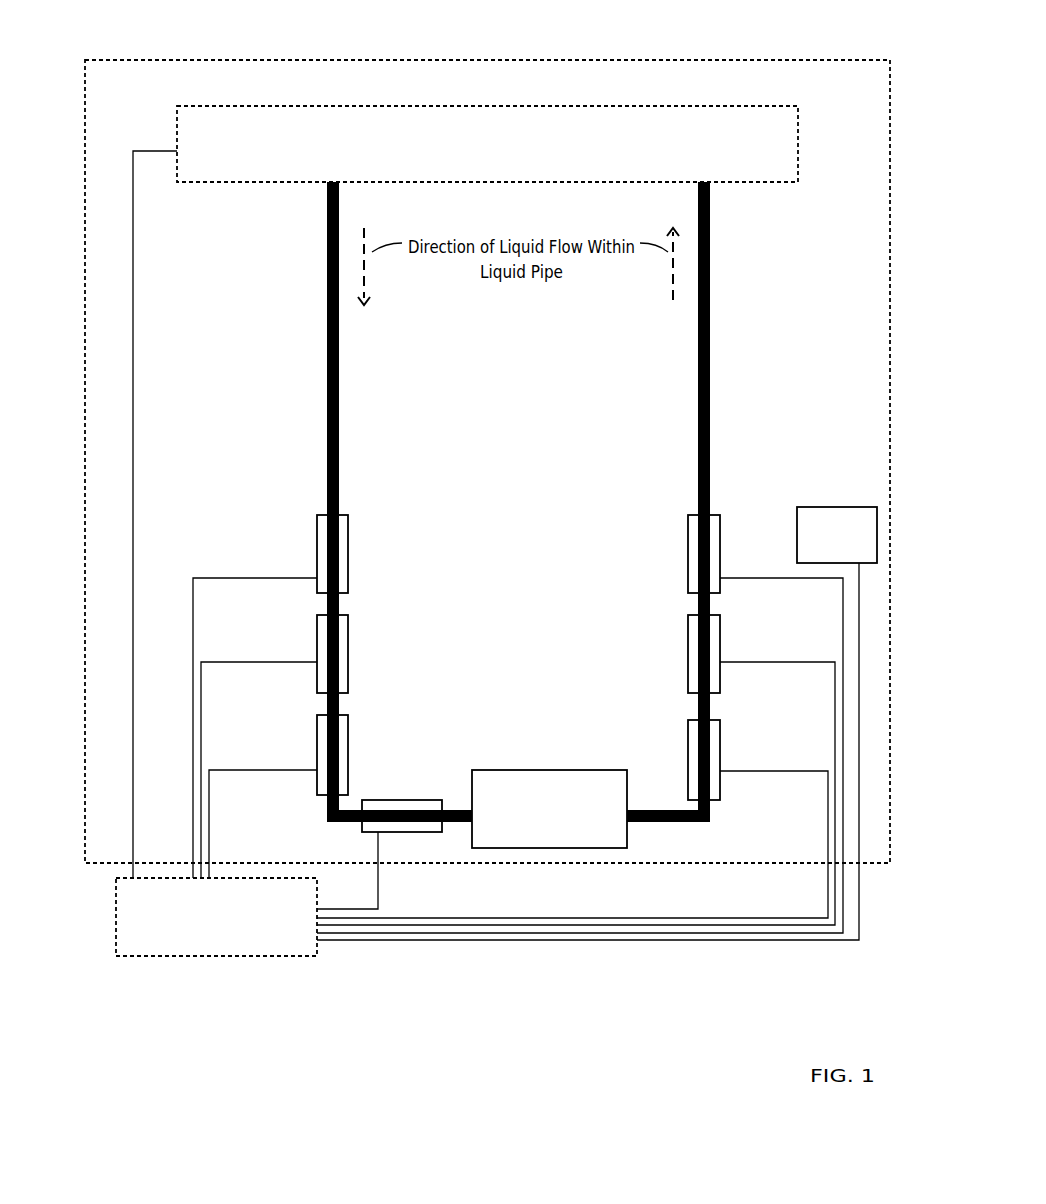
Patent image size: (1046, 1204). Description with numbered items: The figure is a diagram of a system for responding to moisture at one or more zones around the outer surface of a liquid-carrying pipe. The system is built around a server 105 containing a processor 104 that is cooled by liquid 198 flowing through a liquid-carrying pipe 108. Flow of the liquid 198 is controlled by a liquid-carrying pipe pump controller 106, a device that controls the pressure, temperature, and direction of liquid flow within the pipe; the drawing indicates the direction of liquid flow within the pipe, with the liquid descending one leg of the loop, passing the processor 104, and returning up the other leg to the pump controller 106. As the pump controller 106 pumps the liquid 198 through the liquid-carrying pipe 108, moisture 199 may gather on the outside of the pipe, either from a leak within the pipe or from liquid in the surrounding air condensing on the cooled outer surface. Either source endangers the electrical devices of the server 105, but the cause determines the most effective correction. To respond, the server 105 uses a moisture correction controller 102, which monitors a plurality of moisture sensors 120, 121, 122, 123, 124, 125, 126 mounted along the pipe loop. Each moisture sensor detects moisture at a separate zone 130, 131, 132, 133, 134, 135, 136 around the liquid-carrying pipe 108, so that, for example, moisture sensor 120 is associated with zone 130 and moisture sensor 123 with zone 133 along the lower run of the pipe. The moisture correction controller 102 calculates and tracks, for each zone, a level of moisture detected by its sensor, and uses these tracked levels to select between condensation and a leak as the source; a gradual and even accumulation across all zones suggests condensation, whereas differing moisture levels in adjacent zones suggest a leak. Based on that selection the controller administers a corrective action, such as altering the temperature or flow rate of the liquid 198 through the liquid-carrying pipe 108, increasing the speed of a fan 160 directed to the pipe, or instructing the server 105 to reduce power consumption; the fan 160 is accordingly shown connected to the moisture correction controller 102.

The server 105 is at (690, 52).
The liquid-carrying pipe pump controller 106 is at (487, 144).
The liquid-carrying pipe 108 is at (346, 436).
The liquid 198 is at (346, 368).
The moisture sensor 120 is at (308, 534).
The moisture sensor 121 is at (309, 627).
The moisture sensor 122 is at (309, 721).
The moisture sensor 123 is at (416, 842).
The moisture sensor 124 is at (729, 732).
The moisture sensor 125 is at (729, 630).
The moisture sensor 126 is at (729, 534).
The zone 130 is at (374, 548).
The zone 131 is at (374, 652).
The zone 132 is at (374, 732).
The zone 133 is at (410, 790).
The zone 134 is at (666, 732).
The zone 135 is at (666, 650).
The zone 136 is at (666, 545).
The moisture 199 is at (352, 585).
The processor 104 is at (549, 809).
The fan 160 is at (597, 723).
The moisture correction controller 102 is at (216, 553).